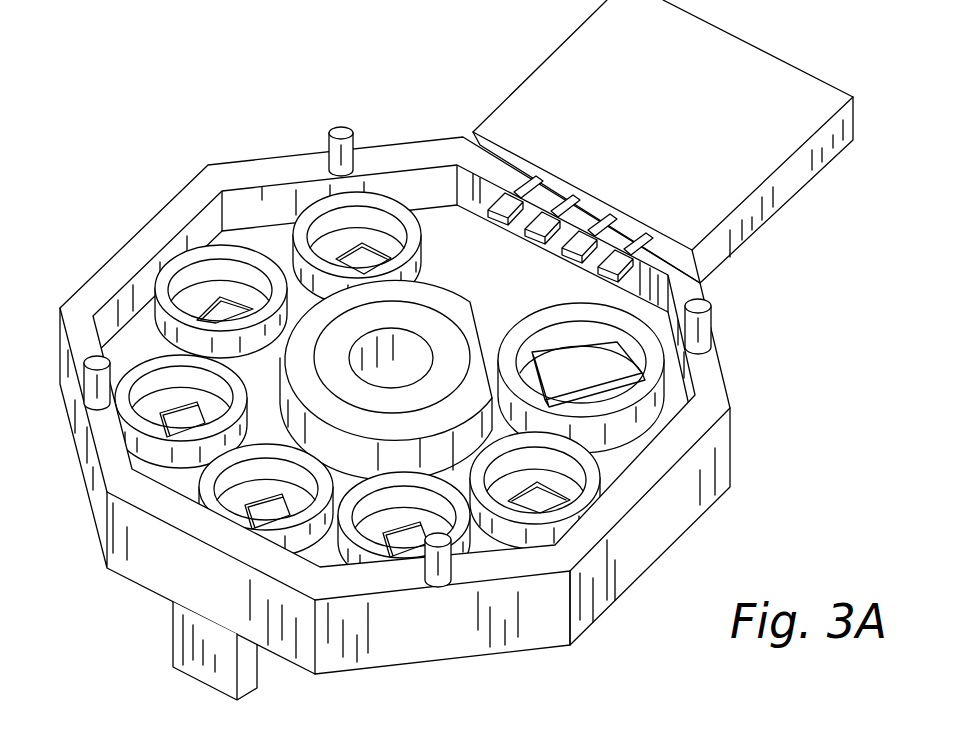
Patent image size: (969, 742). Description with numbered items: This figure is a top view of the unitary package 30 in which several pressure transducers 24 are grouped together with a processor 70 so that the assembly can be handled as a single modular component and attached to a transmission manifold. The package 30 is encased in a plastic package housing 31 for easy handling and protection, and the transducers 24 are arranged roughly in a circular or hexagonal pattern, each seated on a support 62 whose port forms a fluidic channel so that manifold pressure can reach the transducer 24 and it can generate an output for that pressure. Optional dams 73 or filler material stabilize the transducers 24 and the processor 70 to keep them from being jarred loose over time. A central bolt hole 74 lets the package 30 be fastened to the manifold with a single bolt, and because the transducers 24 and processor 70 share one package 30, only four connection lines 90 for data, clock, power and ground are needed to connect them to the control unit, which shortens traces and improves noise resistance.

The package 30 is at (186, 129).
The pressure transducer 24 is at (197, 250).
The support 62 is at (218, 317).
The bolt hole 74 is at (418, 350).
The processor 70 is at (582, 378).
The dam 73 is at (600, 462).
The connection line 90 is at (508, 197).
The package housing 31 is at (440, 628).